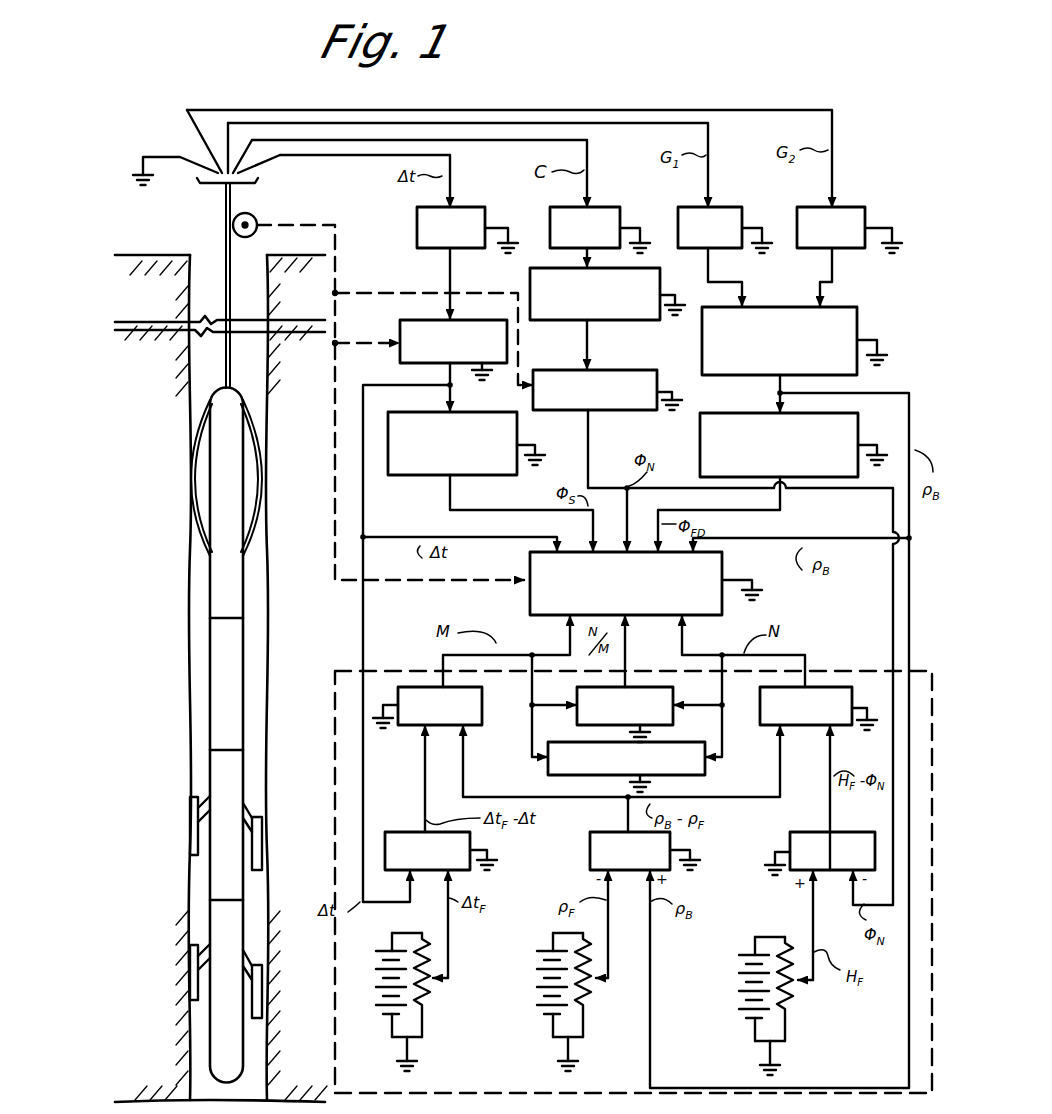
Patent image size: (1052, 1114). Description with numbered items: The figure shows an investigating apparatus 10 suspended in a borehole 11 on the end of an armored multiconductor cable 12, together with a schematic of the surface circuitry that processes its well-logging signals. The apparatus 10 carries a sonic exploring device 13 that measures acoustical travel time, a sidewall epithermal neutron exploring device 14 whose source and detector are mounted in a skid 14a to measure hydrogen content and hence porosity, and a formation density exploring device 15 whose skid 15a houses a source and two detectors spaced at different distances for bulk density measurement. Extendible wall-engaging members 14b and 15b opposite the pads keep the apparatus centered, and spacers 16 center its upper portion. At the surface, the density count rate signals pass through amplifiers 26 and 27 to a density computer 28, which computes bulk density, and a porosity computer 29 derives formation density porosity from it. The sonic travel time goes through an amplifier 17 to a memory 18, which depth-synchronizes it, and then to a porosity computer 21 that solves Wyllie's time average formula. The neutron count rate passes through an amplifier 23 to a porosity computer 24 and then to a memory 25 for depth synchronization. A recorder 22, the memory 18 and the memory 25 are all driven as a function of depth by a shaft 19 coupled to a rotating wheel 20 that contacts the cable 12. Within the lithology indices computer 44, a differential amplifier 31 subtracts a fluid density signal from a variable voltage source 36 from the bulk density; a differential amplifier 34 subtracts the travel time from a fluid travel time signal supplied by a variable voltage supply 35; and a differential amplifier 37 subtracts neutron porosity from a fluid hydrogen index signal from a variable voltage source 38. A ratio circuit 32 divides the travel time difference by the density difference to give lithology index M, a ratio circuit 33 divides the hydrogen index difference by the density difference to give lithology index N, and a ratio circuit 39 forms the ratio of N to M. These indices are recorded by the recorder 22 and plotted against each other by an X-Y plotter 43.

The investigating apparatus 10 is at (207, 655).
The borehole 11 is at (190, 584).
The armored multiconductor cable 12 is at (225, 378).
The sonic exploring device 13 is at (210, 736).
The sidewall epithermal neutron exploring device 14 is at (190, 891).
The skid 14a is at (262, 834).
The extendible wall-engaging member 14b is at (190, 816).
The formation density exploring device 15 is at (190, 1056).
The skid 15a is at (262, 1002).
The extendible wall-engaging member 15b is at (190, 972).
The spacers 16 is at (185, 478).
The amplifier 17 is at (460, 207).
The memory 18 is at (420, 320).
The shaft 19 is at (338, 234).
The rotating wheel 20 is at (256, 225).
The porosity computer 21 is at (483, 476).
The recorder 22 is at (530, 598).
The amplifier 23 is at (600, 207).
The porosity computer 24 is at (604, 320).
The memory 25 is at (598, 374).
The amplifier 26 is at (724, 207).
The amplifier 27 is at (858, 207).
The density computer 28 is at (857, 322).
The porosity computer 29 is at (858, 432).
The differential amplifier 31 is at (590, 852).
The ratio circuit 32 is at (406, 686).
The ratio circuit 33 is at (830, 686).
The differential amplifier 34 is at (390, 832).
The variable voltage supply 35 is at (423, 1028).
The variable voltage source 36 is at (562, 1034).
The differential amplifier 37 is at (854, 832).
The variable voltage source 38 is at (758, 1035).
The ratio circuit 39 is at (642, 686).
The X-Y plotter 43 is at (707, 770).
The lithology indices computer 44 is at (332, 671).